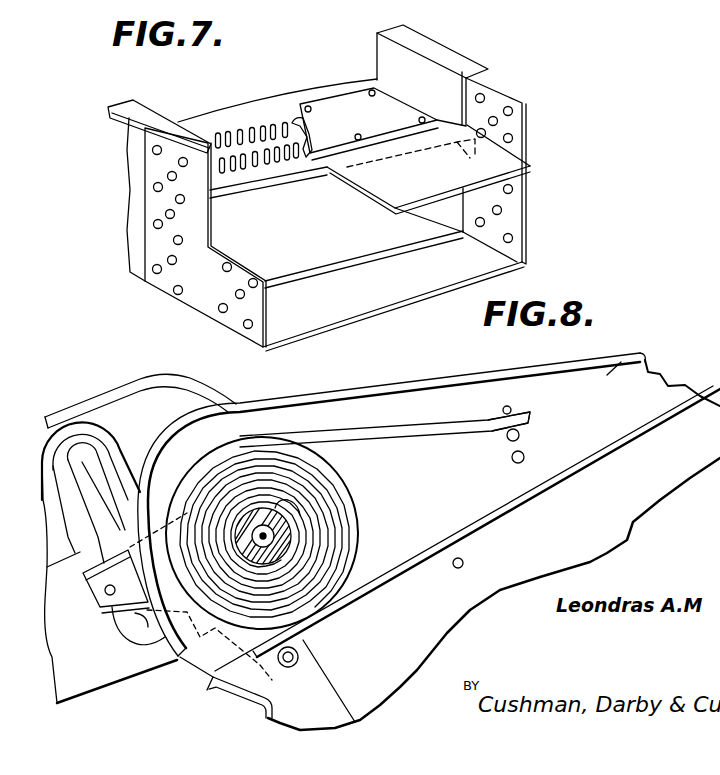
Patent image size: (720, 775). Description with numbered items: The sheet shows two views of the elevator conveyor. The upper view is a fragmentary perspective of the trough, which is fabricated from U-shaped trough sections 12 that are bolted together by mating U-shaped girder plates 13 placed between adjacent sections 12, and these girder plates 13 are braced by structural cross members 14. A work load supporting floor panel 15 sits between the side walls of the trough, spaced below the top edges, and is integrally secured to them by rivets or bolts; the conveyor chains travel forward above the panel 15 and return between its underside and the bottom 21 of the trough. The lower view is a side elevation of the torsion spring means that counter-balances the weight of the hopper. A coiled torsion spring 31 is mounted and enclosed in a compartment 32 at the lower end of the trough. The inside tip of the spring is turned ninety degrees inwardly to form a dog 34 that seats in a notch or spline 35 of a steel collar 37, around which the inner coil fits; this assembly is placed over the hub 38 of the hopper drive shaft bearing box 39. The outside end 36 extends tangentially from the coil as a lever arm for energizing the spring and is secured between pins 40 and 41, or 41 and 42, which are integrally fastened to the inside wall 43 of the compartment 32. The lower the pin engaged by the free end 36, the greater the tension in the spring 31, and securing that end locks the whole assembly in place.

In FIG. 7, the U-shaped trough section 12 is at (483, 60).
In FIG. 7, the U-shaped girder plate 13 is at (152, 238).
In FIG. 7, the structural cross member 14 is at (525, 123).
In FIG. 7, the floor panel 15 is at (268, 118).
In FIG. 7, the bottom of the trough 21 is at (341, 257).
In FIG. 8, the torsion spring 31 is at (316, 433).
In FIG. 8, the compartment 32 is at (398, 385).
In FIG. 8, the dog 34 is at (289, 502).
In FIG. 8, the notch or spline 35 is at (274, 505).
In FIG. 8, the outside end 36 is at (467, 427).
In FIG. 8, the steel collar 37 is at (293, 537).
In FIG. 8, the hub 38 is at (276, 543).
In FIG. 8, the hopper drive shaft bearing box 39 is at (264, 676).
In FIG. 8, the pin 40 is at (513, 408).
In FIG. 8, the pin 41 is at (520, 433).
In FIG. 8, the pin 42 is at (524, 455).
In FIG. 8, the inside wall of compartment 43 is at (630, 354).